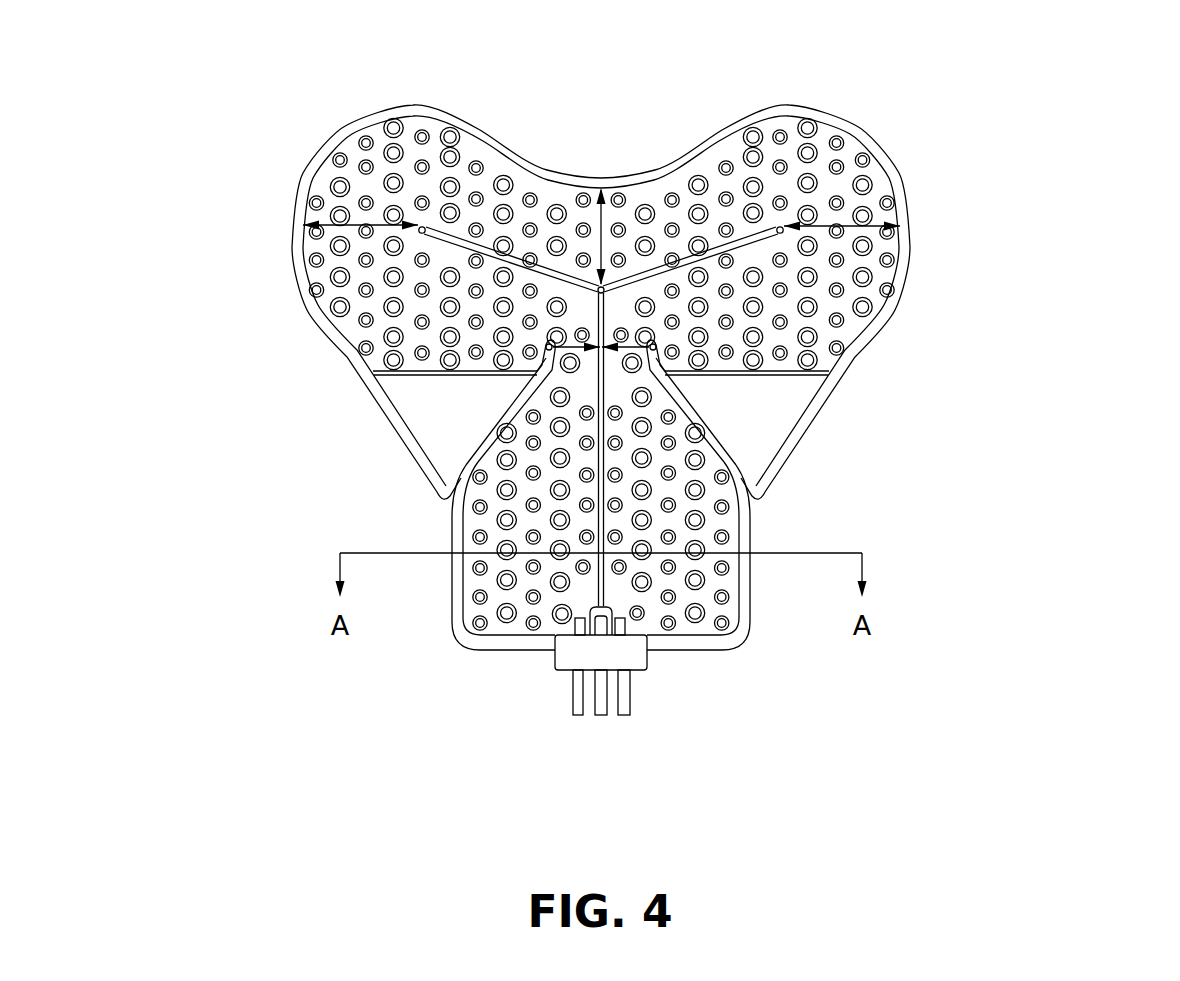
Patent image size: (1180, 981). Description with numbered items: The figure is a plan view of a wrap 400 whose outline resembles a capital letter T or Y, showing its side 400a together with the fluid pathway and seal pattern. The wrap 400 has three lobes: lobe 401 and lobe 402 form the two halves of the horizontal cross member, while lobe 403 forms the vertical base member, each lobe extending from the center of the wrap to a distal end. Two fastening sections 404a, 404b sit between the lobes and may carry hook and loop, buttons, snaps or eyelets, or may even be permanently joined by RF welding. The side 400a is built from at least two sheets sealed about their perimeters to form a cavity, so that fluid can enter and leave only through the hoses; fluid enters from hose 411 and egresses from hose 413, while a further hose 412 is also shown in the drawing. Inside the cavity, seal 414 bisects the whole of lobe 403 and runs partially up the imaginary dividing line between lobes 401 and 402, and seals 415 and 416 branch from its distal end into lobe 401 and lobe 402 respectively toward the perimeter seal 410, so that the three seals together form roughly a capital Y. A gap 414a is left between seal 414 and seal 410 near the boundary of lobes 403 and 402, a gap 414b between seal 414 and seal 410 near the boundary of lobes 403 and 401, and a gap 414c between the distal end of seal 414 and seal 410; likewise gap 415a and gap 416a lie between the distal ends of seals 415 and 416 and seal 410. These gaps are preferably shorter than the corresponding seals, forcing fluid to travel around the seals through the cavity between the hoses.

The wrap 400 is at (1050, 167).
The side 400a is at (864, 198).
The lobe 401 is at (296, 286).
The lobe 402 is at (895, 325).
The lobe 403 is at (758, 635).
The fastening section 404a is at (785, 430).
The fastening section 404b is at (427, 430).
The seal 410 is at (838, 121).
The hose 411 is at (575, 709).
The second connector pin 412 is at (603, 708).
The hose 413 is at (633, 708).
The seal 414 is at (600, 592).
The gap 414a is at (625, 352).
The gap 414b is at (577, 352).
The gap 414c is at (612, 218).
The seal 415 is at (460, 240).
The gap 415a is at (357, 226).
The seal 416 is at (743, 237).
The gap 416a is at (875, 226).